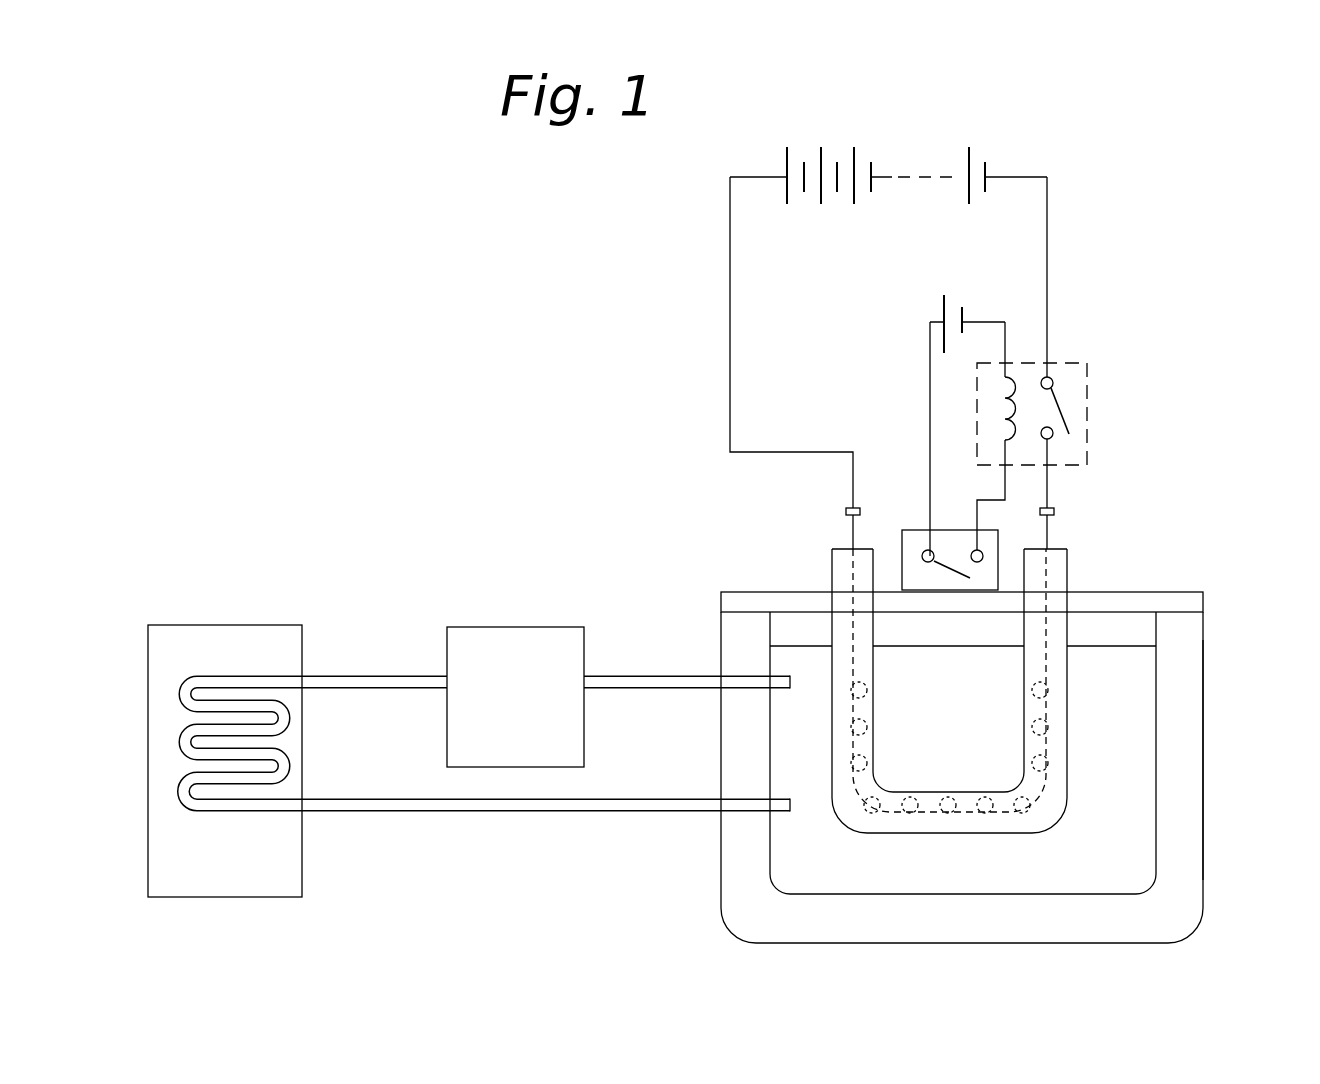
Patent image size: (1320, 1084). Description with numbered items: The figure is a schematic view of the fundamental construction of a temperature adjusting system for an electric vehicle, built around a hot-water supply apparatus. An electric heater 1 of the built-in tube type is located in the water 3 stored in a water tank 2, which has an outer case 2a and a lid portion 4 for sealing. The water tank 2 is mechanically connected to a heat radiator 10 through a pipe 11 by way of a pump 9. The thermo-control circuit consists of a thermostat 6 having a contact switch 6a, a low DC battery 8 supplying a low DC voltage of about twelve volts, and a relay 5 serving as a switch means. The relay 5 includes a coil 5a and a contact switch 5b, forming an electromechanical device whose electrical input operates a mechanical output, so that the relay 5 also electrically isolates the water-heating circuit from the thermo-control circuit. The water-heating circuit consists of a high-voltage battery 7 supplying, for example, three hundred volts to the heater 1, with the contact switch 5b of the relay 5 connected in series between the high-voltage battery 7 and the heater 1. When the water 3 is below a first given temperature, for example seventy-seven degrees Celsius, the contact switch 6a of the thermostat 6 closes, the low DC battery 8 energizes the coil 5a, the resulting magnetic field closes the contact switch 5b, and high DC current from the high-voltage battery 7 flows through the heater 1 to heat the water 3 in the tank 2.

The electric heater 1 is at (1067, 568).
The water tank 2 is at (1208, 851).
The outer case 2a is at (1203, 767).
The water 3 is at (1130, 694).
The lid portion 4 is at (1168, 592).
The relay 5 is at (1087, 422).
The coil 5a is at (1000, 408).
The contact switch 5b is at (1076, 363).
The thermostat 6 is at (908, 530).
The contact switch 6a is at (957, 558).
The high-voltage battery 7 is at (787, 168).
The low DC battery 8 is at (942, 318).
The pump 9 is at (523, 627).
The heat radiator 10 is at (228, 625).
The pipe 11 is at (640, 676).